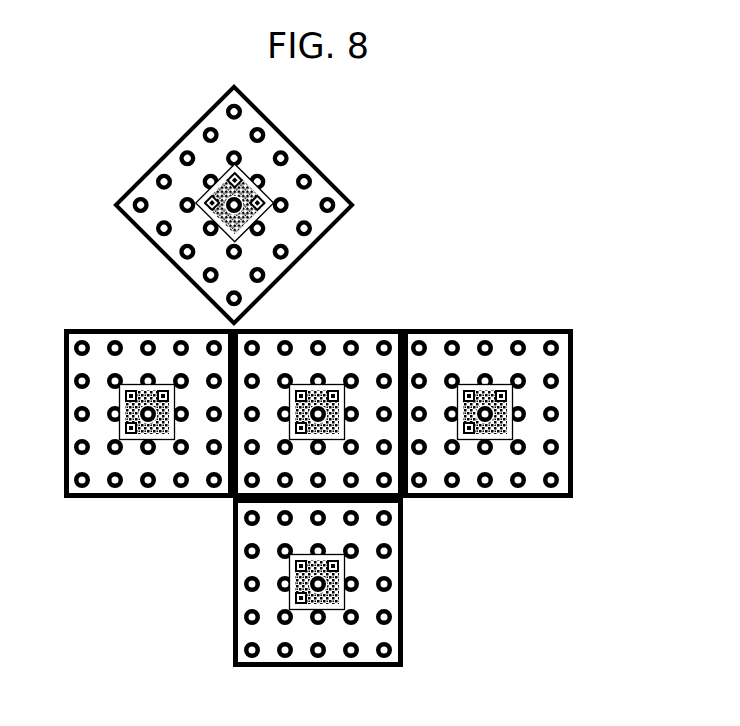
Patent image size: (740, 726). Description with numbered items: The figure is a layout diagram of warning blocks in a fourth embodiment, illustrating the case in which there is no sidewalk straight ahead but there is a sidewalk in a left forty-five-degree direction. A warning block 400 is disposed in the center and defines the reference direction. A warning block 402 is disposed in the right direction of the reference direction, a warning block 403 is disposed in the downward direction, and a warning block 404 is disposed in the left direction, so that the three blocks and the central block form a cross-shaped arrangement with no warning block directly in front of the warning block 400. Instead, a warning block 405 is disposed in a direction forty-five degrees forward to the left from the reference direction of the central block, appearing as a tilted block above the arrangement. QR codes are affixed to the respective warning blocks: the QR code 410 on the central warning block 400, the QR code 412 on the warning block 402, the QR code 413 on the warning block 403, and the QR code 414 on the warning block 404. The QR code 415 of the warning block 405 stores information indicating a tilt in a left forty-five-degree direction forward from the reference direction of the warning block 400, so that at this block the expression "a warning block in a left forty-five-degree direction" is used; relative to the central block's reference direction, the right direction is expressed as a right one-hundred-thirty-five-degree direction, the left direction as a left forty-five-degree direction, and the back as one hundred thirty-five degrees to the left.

The warning block 400 is at (378, 328).
The warning block 402 is at (505, 328).
The warning block 403 is at (342, 668).
The warning block 404 is at (95, 328).
The warning block 405 is at (172, 147).
The QR code 410 is at (353, 379).
The QR code 412 is at (517, 398).
The QR code 413 is at (348, 602).
The QR code 414 is at (123, 442).
The QR code 415 is at (268, 196).